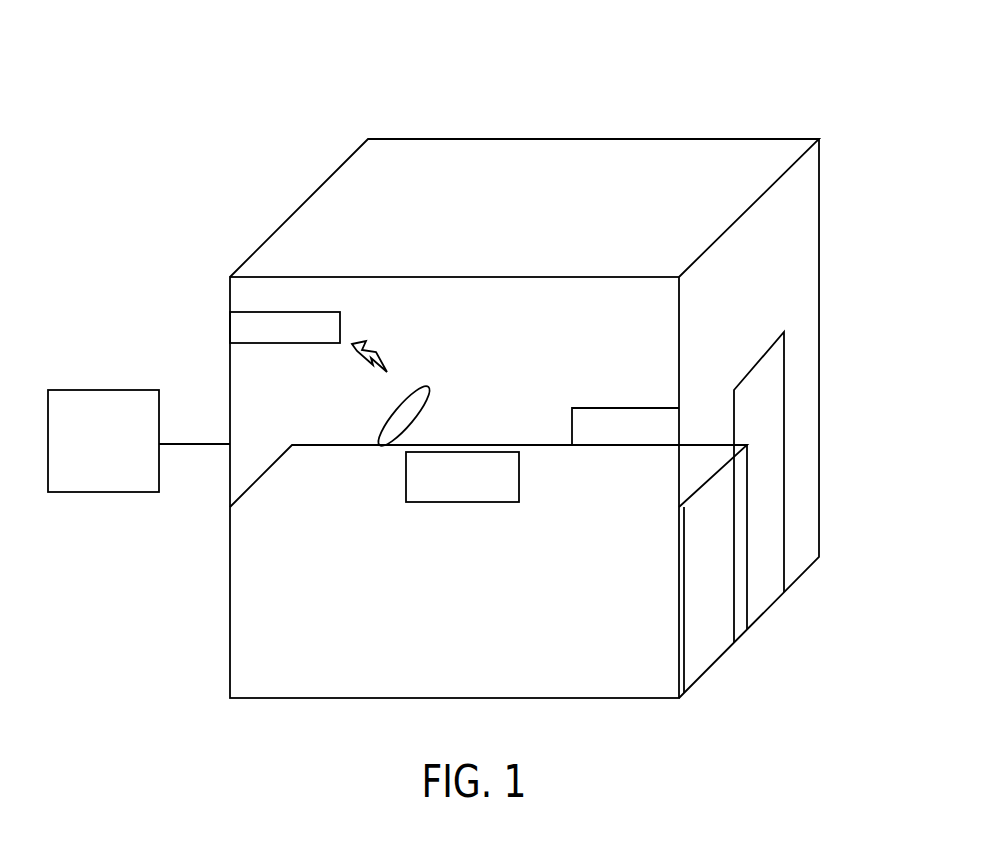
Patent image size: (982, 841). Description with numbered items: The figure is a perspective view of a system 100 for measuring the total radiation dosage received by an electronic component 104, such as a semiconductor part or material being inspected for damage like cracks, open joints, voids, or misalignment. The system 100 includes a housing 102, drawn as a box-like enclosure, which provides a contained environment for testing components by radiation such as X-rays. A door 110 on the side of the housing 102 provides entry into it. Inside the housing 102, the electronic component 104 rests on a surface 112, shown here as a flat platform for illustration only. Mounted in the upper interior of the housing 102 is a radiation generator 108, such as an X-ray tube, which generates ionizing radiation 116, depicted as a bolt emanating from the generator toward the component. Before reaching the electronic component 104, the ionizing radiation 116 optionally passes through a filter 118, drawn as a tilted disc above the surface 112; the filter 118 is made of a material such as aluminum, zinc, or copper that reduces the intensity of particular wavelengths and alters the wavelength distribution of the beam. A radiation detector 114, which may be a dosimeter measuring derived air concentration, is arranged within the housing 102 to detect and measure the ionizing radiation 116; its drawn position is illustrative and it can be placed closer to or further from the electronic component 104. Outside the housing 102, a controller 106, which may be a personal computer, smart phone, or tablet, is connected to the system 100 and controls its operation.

The system 100 is at (503, 88).
The housing 102 is at (745, 138).
The electronic component 104 is at (446, 492).
The controller 106 is at (103, 390).
The radiation generator 108 is at (340, 330).
The door 110 is at (785, 407).
The surface 112 is at (328, 462).
The radiation detector 114 is at (620, 405).
The ionizing radiation 116 is at (383, 358).
The filter 118 is at (425, 417).